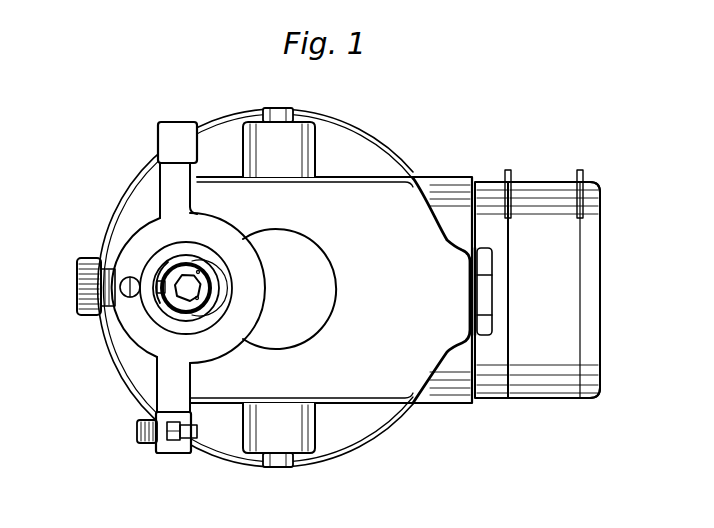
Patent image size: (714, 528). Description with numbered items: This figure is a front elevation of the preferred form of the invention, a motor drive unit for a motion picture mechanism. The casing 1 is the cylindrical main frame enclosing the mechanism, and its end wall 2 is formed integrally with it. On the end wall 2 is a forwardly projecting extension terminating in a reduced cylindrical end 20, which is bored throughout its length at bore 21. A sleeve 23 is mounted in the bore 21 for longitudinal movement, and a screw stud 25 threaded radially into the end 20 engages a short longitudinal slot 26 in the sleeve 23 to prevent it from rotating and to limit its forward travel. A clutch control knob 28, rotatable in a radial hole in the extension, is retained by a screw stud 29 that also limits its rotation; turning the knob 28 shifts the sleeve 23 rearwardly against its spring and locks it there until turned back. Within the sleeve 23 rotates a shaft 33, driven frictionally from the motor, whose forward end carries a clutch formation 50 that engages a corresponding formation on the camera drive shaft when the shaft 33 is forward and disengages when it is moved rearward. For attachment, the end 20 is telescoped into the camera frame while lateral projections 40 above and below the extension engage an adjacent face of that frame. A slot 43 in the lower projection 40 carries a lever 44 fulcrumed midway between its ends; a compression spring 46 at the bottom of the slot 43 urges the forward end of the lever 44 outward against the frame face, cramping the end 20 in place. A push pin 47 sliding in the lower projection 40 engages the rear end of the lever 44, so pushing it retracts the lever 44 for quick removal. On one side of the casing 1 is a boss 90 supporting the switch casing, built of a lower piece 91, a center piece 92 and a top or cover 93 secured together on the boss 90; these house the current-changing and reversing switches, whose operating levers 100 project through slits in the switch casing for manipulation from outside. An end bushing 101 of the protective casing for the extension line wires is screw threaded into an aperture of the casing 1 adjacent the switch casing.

The casing 1 is at (350, 122).
The end wall 2 is at (380, 157).
The reduced cylindrical end 20 is at (163, 250).
The bore 21 is at (176, 255).
The sleeve 23 is at (203, 266).
The screw stud 25 is at (158, 275).
The longitudinal slot 26 is at (160, 303).
The clutch control knob 28 is at (78, 286).
The screw stud 29 is at (121, 294).
The shaft 33 is at (205, 268).
The lateral projection 40 is at (173, 130).
The slot 43 is at (198, 425).
The lever 44 is at (197, 442).
The compression spring 46 is at (172, 443).
The push pin 47 is at (137, 431).
The clutch formation 50 is at (216, 348).
The boss 90 is at (430, 406).
The lower piece 91 is at (490, 404).
The center piece 92 is at (552, 405).
The top or cover 93 is at (597, 253).
The operating levers 100 is at (509, 170).
The end bushing 101 is at (490, 286).